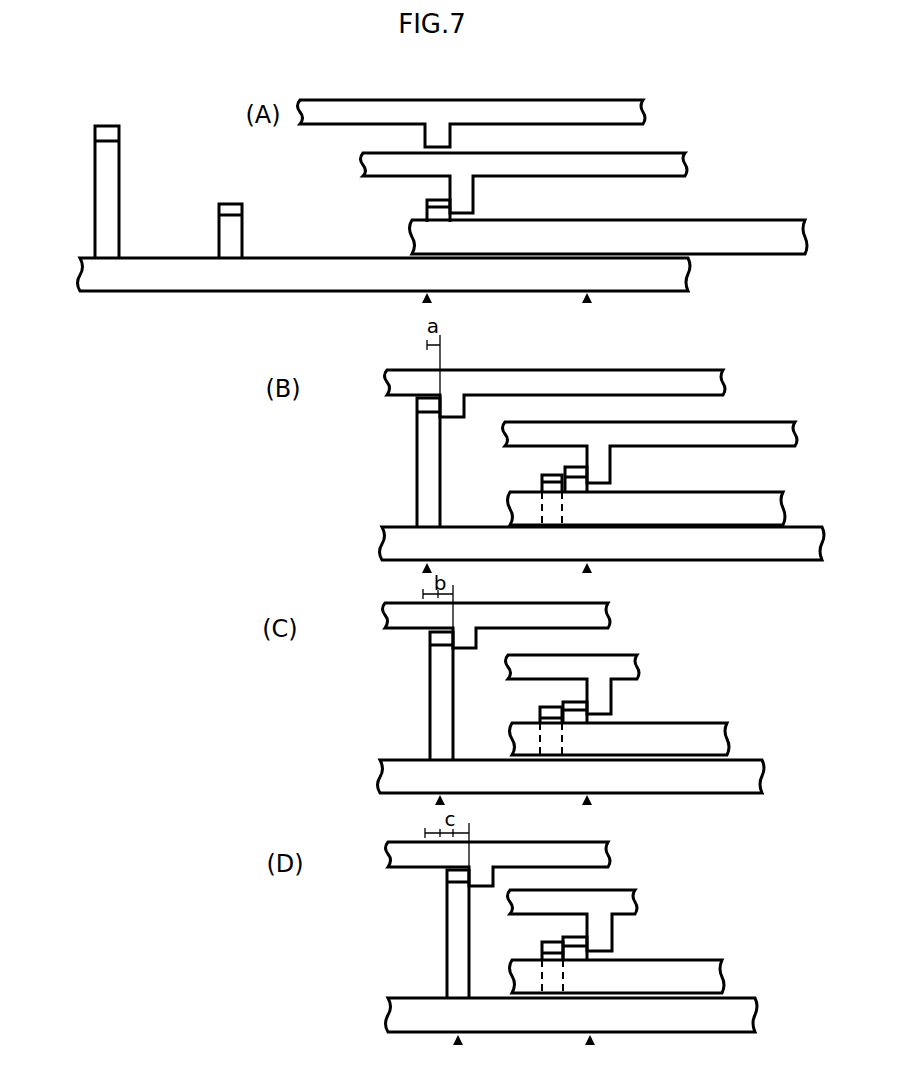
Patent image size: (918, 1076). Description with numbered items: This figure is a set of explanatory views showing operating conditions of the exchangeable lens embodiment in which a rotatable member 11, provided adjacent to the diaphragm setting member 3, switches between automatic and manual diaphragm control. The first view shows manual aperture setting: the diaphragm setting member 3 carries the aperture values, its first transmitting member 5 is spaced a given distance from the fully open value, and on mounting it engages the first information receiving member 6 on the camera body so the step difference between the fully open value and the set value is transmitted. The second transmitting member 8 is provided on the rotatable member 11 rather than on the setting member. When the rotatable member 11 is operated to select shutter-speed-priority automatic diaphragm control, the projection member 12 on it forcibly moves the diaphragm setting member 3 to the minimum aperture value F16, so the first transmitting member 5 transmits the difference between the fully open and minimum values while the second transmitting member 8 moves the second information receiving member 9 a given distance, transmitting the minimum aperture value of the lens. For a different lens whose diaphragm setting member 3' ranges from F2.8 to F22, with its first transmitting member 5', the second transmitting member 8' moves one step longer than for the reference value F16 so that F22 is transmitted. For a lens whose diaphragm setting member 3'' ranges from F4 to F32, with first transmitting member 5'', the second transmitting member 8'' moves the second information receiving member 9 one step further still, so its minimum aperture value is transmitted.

The diaphragm setting member 3 is at (609, 355).
The diaphragm setting member 3' is at (620, 720).
The diaphragm setting member 3'' is at (617, 958).
The first transmitting member 5 is at (484, 340).
The first transmitting member 5' is at (546, 703).
The first transmitting member 5'' is at (546, 940).
The first information receiving member 6 is at (468, 205).
The second transmitting member 8 is at (267, 326).
The second transmitting member 8' is at (405, 696).
The second transmitting member 8'' is at (419, 934).
The second information receiving member 9 is at (444, 141).
The rotatable member 11 is at (250, 277).
The projection member 12 is at (236, 210).